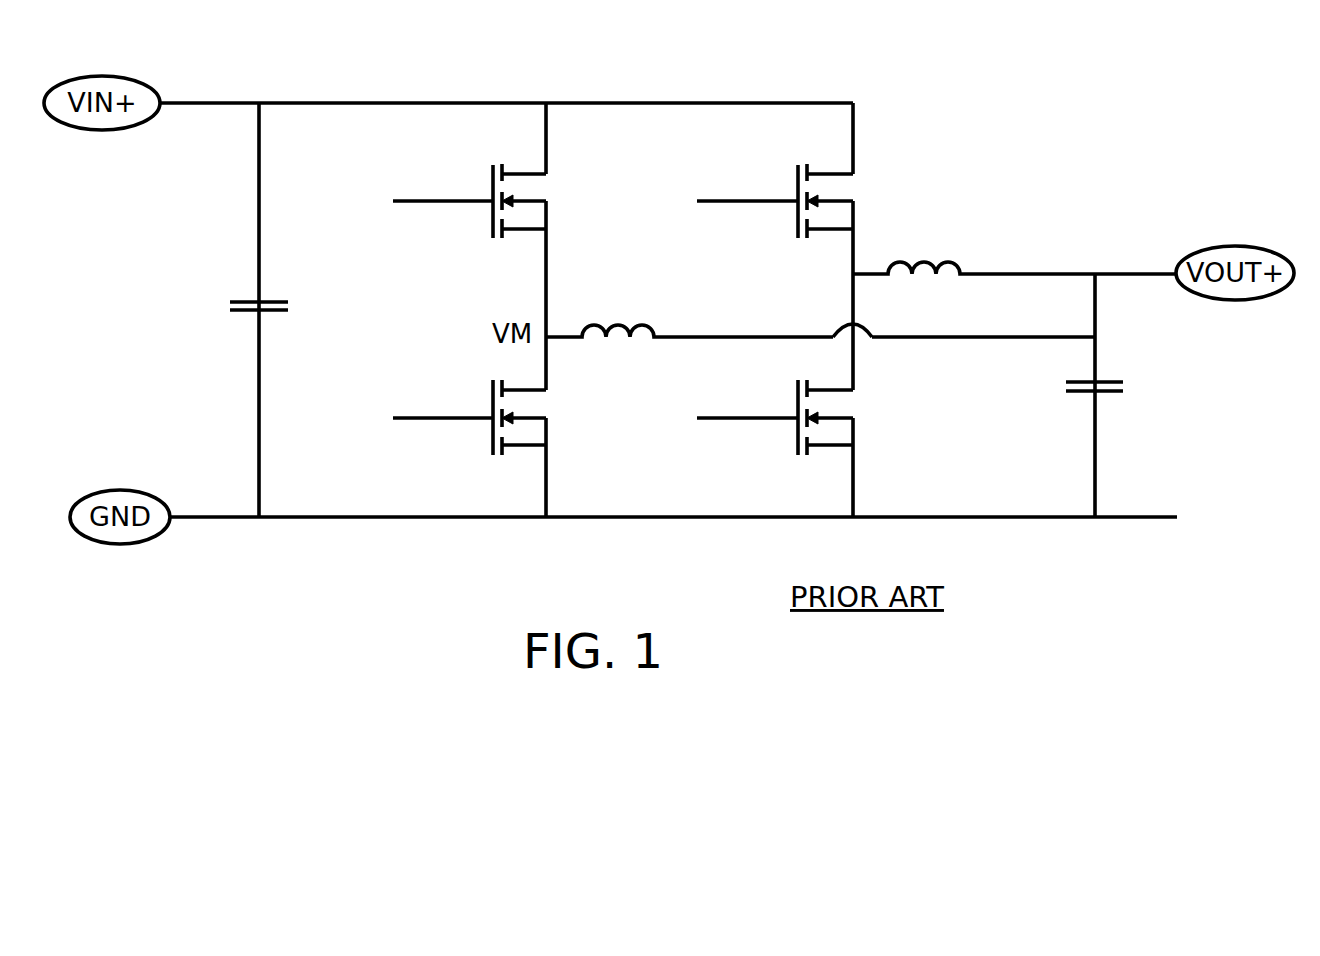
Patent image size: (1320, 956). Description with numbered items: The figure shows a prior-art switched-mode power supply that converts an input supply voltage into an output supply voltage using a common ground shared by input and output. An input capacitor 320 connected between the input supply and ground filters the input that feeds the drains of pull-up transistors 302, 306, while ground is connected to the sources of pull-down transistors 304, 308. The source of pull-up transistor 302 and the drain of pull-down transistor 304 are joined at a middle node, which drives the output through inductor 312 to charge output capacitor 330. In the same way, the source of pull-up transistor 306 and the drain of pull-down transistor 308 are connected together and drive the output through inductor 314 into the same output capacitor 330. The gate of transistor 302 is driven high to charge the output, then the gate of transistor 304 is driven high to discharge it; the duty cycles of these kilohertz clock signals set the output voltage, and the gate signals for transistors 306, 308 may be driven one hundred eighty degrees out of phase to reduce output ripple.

The pull-up transistor 302 is at (493, 230).
The pull-down transistor 304 is at (493, 447).
The pull-up transistor 306 is at (798, 230).
The pull-down transistor 308 is at (798, 447).
The inductor 312 is at (620, 340).
The inductor 314 is at (926, 277).
The input capacitor 320 is at (284, 311).
The output capacitor 330 is at (1116, 392).